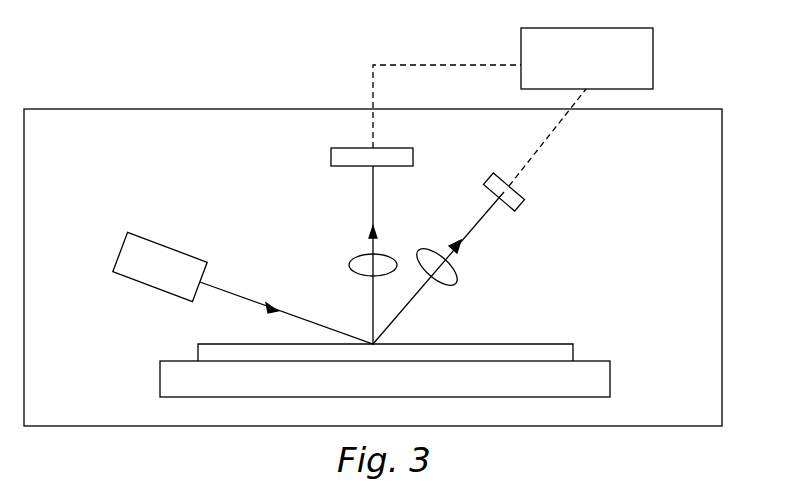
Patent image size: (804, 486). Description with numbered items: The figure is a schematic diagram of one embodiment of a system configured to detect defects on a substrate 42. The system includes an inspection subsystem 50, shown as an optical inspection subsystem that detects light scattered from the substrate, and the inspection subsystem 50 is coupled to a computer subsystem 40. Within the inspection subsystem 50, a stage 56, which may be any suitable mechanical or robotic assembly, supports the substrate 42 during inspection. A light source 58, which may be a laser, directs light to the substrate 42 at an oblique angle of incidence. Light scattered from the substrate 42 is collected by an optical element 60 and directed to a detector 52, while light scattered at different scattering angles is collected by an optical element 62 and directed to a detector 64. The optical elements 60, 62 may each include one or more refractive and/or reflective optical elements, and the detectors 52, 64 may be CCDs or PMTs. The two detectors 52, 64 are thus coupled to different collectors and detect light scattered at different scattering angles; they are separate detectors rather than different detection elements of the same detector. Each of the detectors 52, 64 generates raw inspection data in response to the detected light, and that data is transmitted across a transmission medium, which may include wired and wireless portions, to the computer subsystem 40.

The computer subsystem 40 is at (653, 48).
The substrate 42 is at (557, 344).
The inspection subsystem 50 is at (722, 216).
The detector 52 is at (413, 158).
The stage 56 is at (566, 387).
The light source 58 is at (118, 252).
The optical element 60 is at (352, 258).
The optical element 62 is at (457, 285).
The detector 64 is at (521, 207).